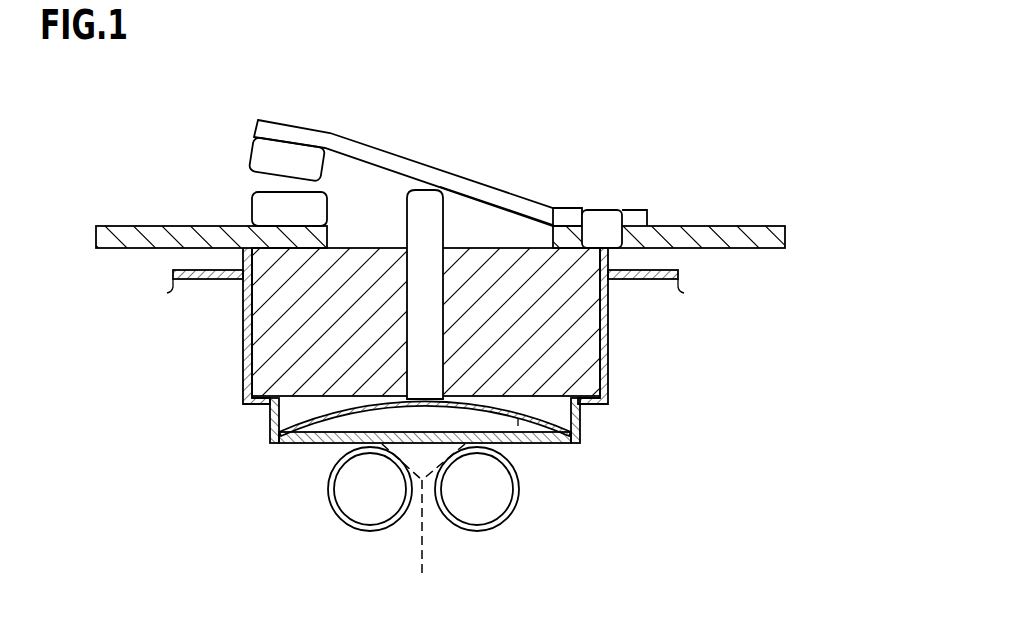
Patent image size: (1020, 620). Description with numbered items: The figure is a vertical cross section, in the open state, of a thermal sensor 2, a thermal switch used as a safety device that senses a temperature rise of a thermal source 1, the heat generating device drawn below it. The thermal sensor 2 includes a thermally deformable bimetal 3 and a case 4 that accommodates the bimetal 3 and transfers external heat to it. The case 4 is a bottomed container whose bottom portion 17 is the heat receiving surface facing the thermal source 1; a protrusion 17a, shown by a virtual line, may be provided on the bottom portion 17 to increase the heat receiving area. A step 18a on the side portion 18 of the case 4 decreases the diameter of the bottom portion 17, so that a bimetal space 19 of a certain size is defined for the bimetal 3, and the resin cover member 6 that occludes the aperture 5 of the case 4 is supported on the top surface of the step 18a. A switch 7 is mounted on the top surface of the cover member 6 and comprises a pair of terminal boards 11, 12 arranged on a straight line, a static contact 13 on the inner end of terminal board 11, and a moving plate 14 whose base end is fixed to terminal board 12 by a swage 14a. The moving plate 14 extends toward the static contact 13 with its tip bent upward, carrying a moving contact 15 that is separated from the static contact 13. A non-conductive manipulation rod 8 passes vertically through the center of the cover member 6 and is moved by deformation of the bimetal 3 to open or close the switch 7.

The thermal source 1 is at (513, 515).
The thermal sensor 2 is at (384, 154).
The bimetal 3 is at (323, 413).
The case 4 is at (457, 370).
The aperture 5 is at (250, 262).
The cover member 6 is at (272, 371).
The switch 7 is at (428, 152).
The manipulation rod 8 is at (407, 332).
The terminal board 11 is at (96, 233).
The terminal board 12 is at (750, 226).
The static contact 13 is at (252, 210).
The moving plate 14 is at (460, 177).
The swage 14a is at (610, 210).
The moving contact 15 is at (255, 147).
The bottom portion 17 is at (570, 443).
The protrusion 17a is at (423, 527).
The side portion 18 is at (606, 371).
The step 18a is at (580, 420).
The bimetal space 19 is at (518, 426).